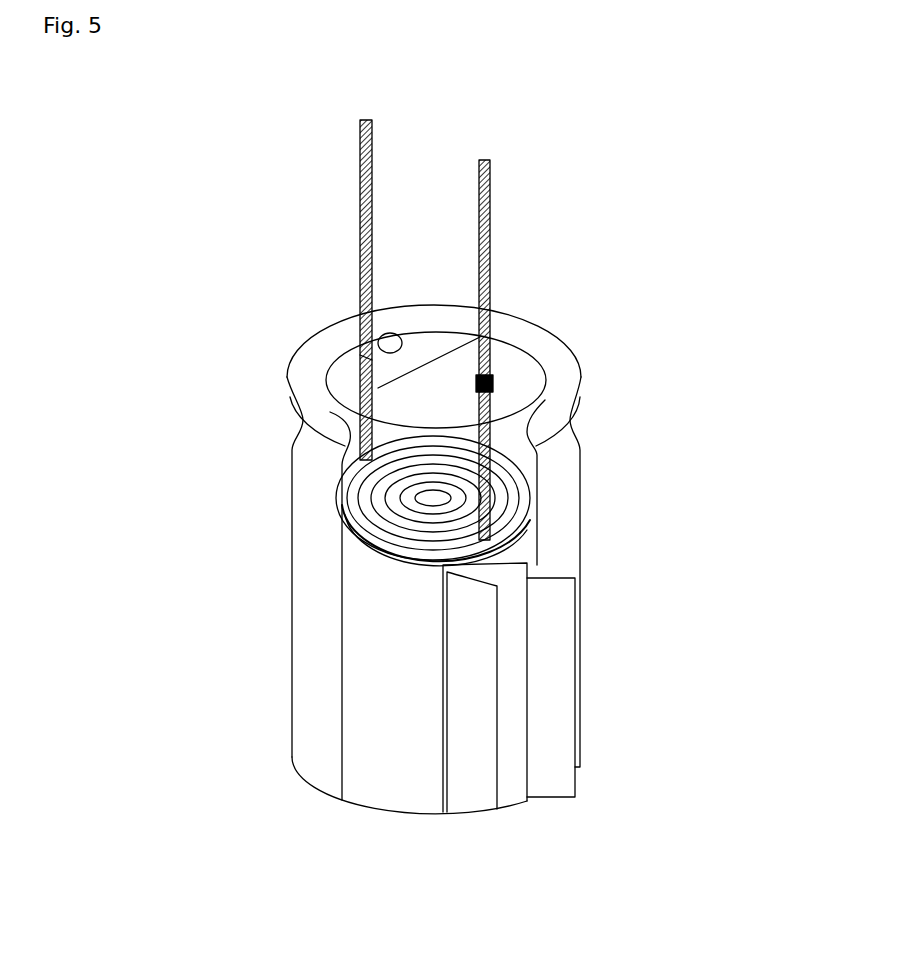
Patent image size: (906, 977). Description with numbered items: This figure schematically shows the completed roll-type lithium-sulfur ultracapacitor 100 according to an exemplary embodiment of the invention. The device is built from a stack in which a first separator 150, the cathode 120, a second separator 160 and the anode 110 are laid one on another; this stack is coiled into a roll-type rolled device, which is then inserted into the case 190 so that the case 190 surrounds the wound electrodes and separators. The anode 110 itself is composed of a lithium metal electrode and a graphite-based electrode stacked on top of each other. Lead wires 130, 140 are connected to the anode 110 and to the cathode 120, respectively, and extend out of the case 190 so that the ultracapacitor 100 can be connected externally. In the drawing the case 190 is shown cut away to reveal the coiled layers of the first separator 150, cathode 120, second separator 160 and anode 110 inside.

The capacitor 100 is at (453, 92).
The anode 110 is at (550, 792).
The cathode 120 is at (465, 792).
The lead wire 130 is at (490, 250).
The lead wire 140 is at (360, 234).
The first separator 150 is at (393, 790).
The second separator 160 is at (515, 790).
The case 190 is at (568, 525).